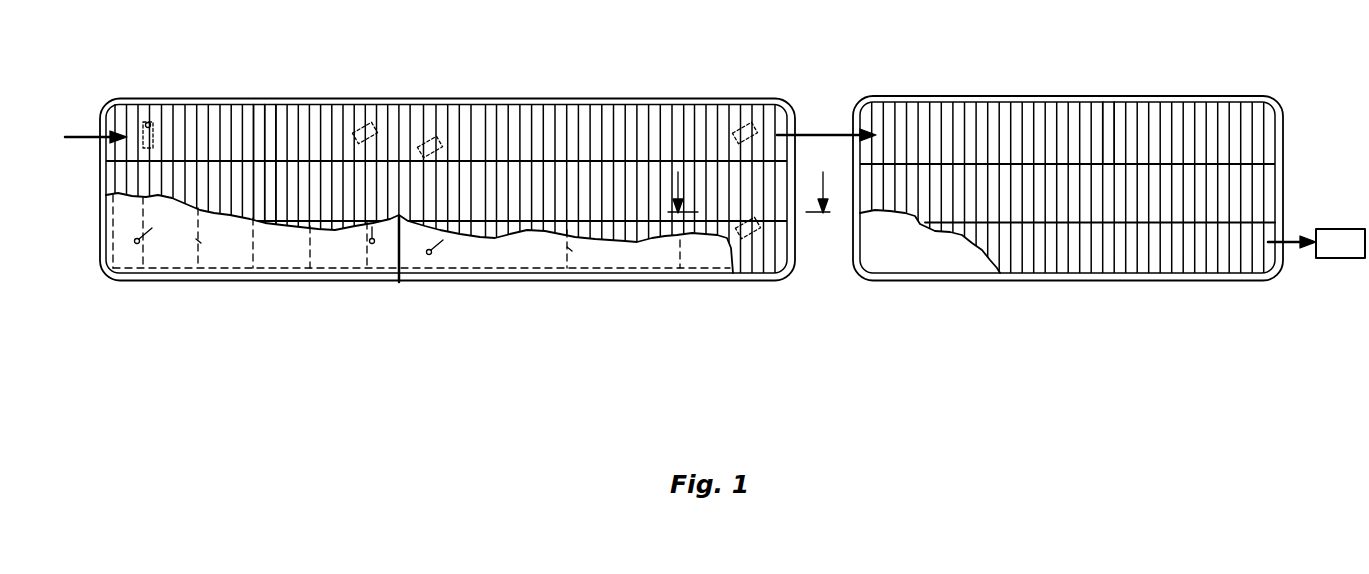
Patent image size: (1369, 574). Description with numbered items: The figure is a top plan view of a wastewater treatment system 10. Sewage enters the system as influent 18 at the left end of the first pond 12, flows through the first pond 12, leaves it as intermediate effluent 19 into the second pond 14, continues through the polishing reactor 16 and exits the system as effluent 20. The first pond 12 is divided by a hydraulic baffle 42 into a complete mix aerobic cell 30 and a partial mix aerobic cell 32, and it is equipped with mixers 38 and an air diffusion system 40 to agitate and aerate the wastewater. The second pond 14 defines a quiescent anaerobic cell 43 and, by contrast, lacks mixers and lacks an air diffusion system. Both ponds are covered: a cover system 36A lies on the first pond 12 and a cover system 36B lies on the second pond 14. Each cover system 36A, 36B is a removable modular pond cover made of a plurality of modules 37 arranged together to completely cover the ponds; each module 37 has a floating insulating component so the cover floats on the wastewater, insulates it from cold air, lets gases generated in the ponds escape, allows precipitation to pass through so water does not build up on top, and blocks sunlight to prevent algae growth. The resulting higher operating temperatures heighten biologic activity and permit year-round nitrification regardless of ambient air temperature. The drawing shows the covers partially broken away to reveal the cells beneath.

The wastewater treatment system 10 is at (647, 72).
The first pond 12 is at (438, 92).
The second pond 14 is at (951, 82).
The polishing reactor 16 is at (1347, 229).
The influent 18 is at (93, 135).
The intermediate effluent 19 is at (823, 134).
The effluent 20 is at (1283, 245).
The complete mix aerobic cell 30 is at (253, 275).
The partial mix aerobic cell 32 is at (548, 275).
The cover system 36A is at (502, 126).
The cover system 36B is at (1178, 128).
The modules 37 is at (282, 113).
The mixers 38 is at (147, 120).
The air diffusion system 40 is at (205, 247).
The hydraulic baffle 42 is at (401, 252).
The quiescent anaerobic cell 43 is at (1040, 255).